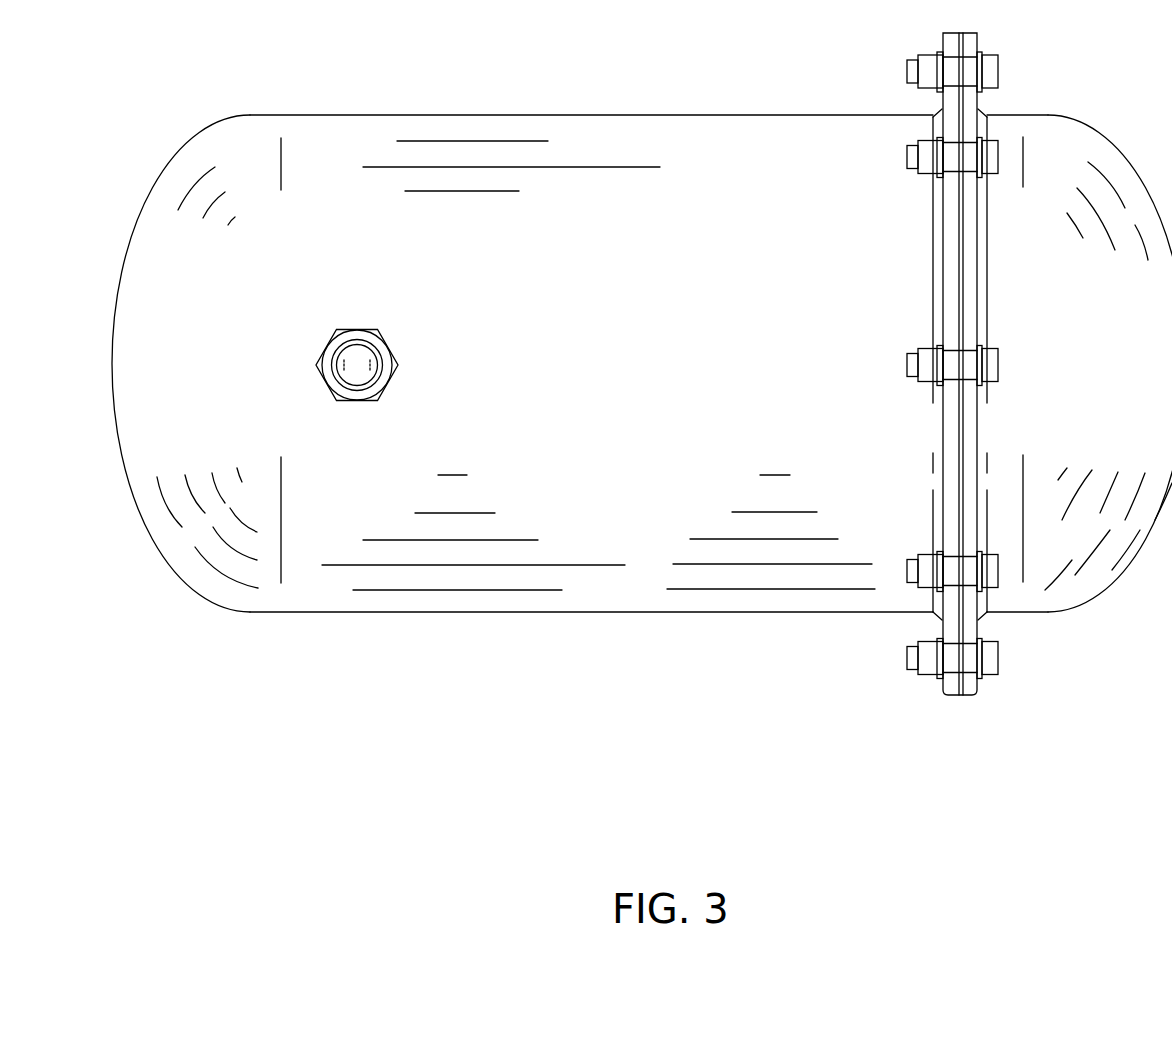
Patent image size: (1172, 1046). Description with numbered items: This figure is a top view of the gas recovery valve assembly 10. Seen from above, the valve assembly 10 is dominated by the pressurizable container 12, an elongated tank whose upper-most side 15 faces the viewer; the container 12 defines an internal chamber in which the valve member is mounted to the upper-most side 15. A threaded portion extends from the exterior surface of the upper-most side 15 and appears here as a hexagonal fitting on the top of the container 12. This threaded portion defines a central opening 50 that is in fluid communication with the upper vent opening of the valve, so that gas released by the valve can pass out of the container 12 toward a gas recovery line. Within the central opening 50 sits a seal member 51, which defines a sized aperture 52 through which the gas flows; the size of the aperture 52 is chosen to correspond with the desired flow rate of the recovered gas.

The valve assembly 10 is at (781, 36).
The pressurizable container 12 is at (513, 117).
The upper-most side 15 is at (718, 230).
The central opening 50 is at (375, 352).
The seal member 51 is at (350, 353).
The sized aperture 52 is at (358, 363).